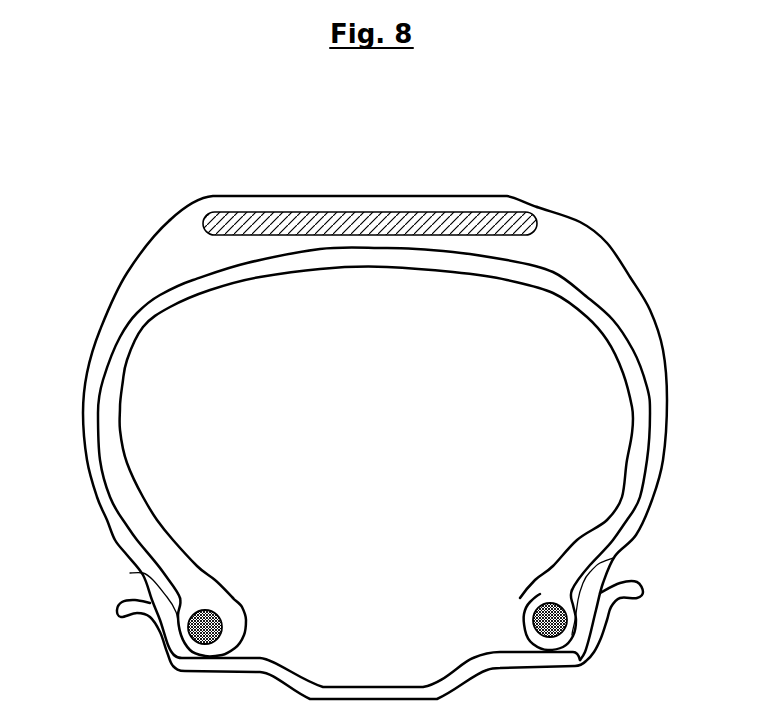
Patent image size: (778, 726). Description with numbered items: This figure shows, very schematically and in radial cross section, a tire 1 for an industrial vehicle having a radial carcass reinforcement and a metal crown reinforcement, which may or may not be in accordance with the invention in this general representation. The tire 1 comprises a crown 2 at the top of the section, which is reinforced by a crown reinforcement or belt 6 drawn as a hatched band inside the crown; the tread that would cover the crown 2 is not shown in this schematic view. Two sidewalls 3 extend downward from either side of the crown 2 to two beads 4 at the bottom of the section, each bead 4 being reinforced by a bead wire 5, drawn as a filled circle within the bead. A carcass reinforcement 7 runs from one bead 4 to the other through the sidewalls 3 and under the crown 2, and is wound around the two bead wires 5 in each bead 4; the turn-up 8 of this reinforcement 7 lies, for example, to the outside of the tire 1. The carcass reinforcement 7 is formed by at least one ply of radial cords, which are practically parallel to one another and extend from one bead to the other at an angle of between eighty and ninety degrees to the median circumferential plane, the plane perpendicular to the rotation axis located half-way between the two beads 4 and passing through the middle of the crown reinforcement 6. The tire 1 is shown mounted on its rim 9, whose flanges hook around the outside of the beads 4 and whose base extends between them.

The tire 1 is at (689, 350).
The crown 2 is at (462, 200).
The sidewall 3 is at (90, 423).
The bead 4 is at (232, 647).
The bead wire 5 is at (222, 627).
The crown reinforcement or belt 6 is at (367, 212).
The carcass reinforcement 7 is at (120, 335).
The turn-up 8 is at (130, 573).
The rim 9 is at (167, 633).